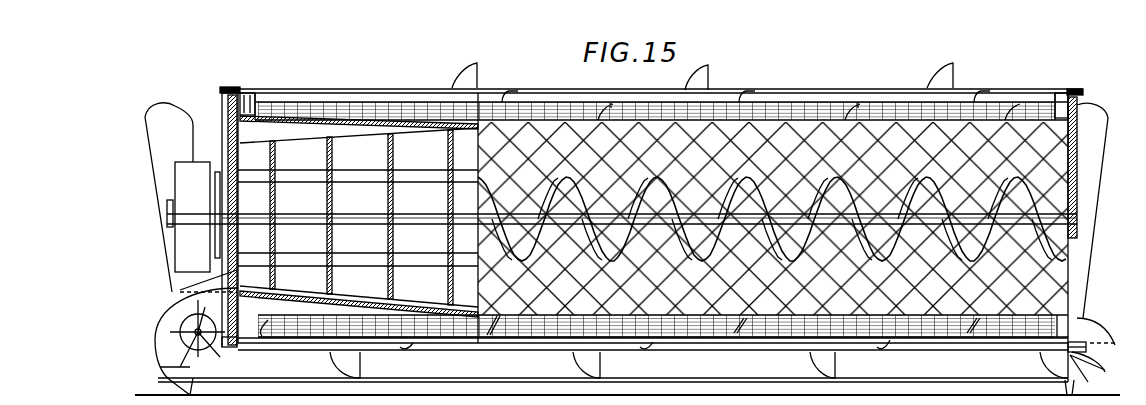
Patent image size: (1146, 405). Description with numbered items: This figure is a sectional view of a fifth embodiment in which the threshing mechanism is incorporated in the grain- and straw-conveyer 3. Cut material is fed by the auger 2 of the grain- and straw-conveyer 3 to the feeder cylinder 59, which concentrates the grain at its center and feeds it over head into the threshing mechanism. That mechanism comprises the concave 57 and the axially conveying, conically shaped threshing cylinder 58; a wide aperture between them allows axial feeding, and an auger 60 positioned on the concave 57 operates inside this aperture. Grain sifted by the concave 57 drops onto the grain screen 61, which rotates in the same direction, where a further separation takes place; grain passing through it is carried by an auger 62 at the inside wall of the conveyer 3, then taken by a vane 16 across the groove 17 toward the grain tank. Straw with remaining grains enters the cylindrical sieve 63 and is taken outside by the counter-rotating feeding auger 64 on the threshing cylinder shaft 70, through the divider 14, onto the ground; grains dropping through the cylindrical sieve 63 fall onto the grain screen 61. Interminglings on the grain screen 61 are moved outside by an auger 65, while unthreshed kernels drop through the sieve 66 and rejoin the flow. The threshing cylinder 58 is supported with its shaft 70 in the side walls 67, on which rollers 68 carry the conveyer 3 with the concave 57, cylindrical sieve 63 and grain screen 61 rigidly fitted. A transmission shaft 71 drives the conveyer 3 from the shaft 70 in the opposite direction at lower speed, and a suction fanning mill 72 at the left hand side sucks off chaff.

The auger 2 is at (703, 73).
The grain- and straw-conveyer 3 is at (793, 90).
The divider 14 is at (1097, 118).
The vane 16 is at (1097, 353).
The groove 17 is at (1080, 380).
The concave 57 is at (333, 128).
The threshing cylinder 58 is at (343, 140).
The feeder cylinder 59 is at (203, 350).
The auger 60 is at (253, 102).
The grain screen 61 is at (372, 320).
The auger 62 is at (643, 342).
The cylindrical sieve 63 is at (683, 298).
The feeding auger 64 is at (565, 183).
The auger 65 is at (490, 320).
The sieve 66 is at (1097, 343).
The side walls 67 is at (1075, 150).
The roller 68 is at (1063, 93).
The threshing cylinder shaft 70 is at (343, 222).
The transmission shaft 71 is at (220, 140).
The suction fanning mill 72 is at (188, 167).